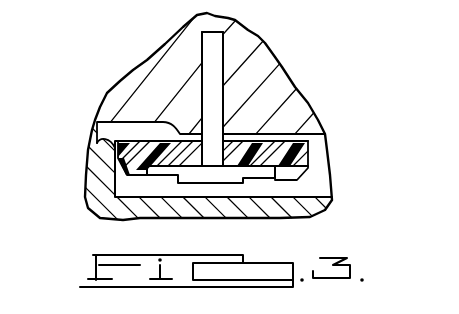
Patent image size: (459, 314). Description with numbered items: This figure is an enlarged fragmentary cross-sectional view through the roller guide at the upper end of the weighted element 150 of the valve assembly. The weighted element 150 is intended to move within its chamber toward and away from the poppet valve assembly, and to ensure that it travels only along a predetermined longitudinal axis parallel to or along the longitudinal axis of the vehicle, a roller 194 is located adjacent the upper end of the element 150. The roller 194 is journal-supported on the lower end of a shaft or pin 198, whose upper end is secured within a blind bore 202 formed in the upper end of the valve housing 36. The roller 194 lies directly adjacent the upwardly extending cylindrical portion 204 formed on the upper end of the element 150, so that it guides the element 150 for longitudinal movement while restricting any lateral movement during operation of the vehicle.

The valve housing 36 is at (283, 98).
The weighted element 150 is at (302, 198).
The roller 194 is at (297, 158).
The shaft or pin 198 is at (215, 70).
The blind bore 202 is at (206, 47).
The cylindrical portion 204 is at (103, 157).